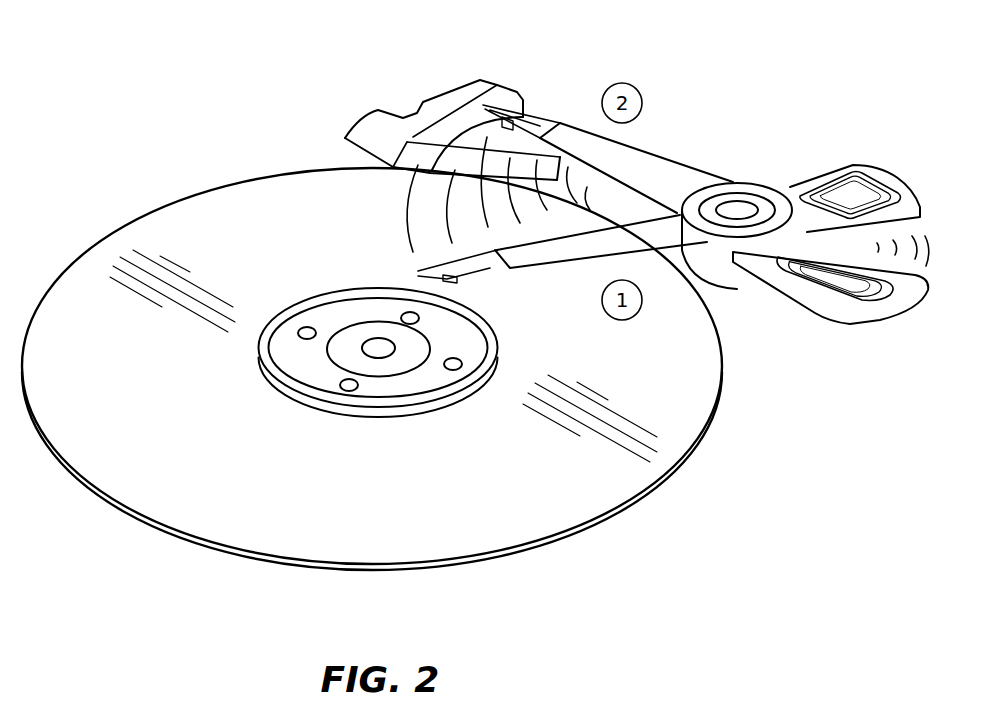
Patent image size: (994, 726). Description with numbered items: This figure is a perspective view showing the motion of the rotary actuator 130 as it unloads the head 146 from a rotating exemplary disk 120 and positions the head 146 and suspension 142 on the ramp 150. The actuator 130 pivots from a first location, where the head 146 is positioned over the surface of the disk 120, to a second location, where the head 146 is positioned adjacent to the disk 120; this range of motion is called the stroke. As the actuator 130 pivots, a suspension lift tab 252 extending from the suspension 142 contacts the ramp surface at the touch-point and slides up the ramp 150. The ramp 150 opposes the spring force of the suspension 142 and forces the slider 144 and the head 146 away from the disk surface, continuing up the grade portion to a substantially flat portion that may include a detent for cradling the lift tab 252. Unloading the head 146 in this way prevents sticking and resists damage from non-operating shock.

The disk 120 is at (366, 488).
The actuator 130 is at (760, 128).
The suspension 142 is at (488, 270).
The slider 144 is at (406, 254).
The head 146 is at (455, 283).
The ramp 150 is at (405, 90).
The suspension lift tab 252 is at (413, 273).